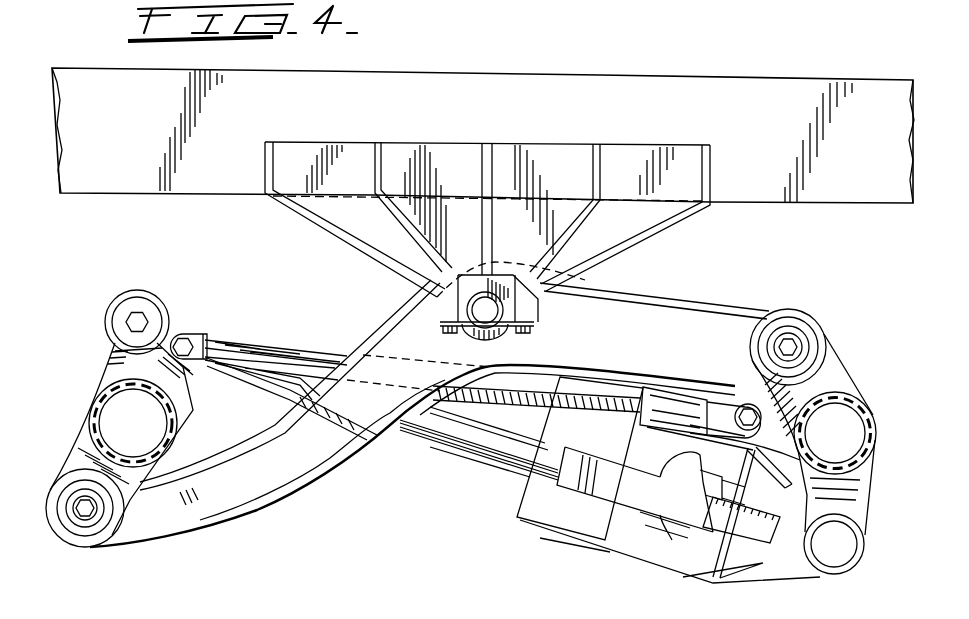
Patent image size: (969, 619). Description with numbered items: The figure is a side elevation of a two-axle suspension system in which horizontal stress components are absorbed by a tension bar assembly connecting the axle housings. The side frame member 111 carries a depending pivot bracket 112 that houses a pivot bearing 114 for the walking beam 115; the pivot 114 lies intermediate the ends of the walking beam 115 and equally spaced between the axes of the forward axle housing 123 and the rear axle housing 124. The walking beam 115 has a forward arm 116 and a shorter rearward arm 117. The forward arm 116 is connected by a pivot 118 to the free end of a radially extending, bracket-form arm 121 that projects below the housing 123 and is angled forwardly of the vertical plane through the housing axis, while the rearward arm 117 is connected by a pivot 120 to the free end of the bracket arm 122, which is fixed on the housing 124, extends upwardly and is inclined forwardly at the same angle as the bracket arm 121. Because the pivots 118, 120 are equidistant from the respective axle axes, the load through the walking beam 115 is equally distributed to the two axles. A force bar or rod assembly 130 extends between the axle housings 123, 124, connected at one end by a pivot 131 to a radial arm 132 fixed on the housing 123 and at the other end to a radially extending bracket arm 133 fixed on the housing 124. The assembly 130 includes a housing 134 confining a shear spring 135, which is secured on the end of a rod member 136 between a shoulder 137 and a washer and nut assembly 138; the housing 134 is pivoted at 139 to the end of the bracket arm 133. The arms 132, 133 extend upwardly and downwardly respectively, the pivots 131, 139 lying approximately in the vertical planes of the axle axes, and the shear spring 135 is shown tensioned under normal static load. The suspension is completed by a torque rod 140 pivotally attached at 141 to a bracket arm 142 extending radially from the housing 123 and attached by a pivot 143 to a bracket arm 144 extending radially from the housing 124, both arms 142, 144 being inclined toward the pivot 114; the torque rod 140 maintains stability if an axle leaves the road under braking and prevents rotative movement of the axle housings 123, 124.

The side frame member 111 is at (530, 90).
The pivot bracket 112 is at (693, 207).
The pivot bearing 114 is at (478, 312).
The walking beam 115 is at (653, 285).
The forward arm 116 is at (326, 465).
The rearward arm 117 is at (712, 304).
The pivot 118 is at (92, 516).
The pivot 120 is at (791, 343).
The bracket arm 121 is at (175, 470).
The bracket arm 122 is at (833, 376).
The axle housing 123 is at (100, 418).
The axle housing 124 is at (863, 406).
The force bar assembly 130 is at (421, 453).
The pivot 131 is at (140, 322).
The radial arm 132 is at (110, 368).
The bracket arm 133 is at (863, 510).
The shear spring housing 134 is at (602, 543).
The shear spring 135 is at (577, 518).
The rod member 136 is at (482, 443).
The shoulder 137 is at (517, 505).
The washer and nut assembly 138 is at (693, 577).
The pivot 139 is at (845, 553).
The torque rod 140 is at (333, 350).
The pivot 141 is at (188, 344).
The bracket arm 142 is at (181, 366).
The pivot 143 is at (710, 395).
The bracket arm 144 is at (747, 408).